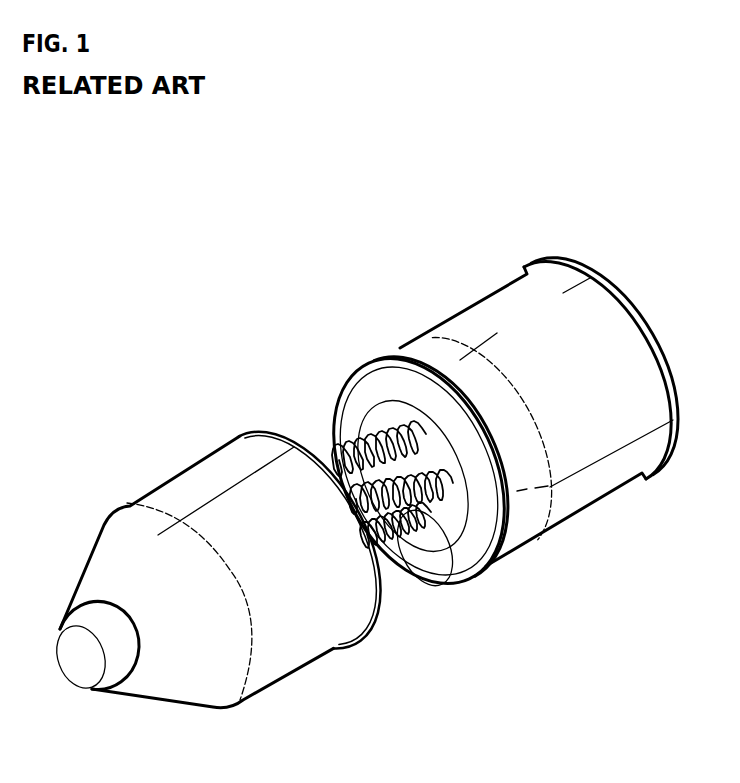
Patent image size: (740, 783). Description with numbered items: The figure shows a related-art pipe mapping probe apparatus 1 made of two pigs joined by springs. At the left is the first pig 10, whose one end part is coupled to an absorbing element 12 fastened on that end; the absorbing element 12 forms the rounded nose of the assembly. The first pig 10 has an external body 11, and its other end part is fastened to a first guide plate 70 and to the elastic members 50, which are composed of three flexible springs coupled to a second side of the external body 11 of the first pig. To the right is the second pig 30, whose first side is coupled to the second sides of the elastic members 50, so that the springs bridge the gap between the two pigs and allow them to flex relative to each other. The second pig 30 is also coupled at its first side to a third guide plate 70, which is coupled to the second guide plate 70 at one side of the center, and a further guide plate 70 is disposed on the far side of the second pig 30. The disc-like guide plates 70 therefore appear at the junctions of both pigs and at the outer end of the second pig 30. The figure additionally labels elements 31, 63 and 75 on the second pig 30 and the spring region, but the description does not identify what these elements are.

The connector assembly (related art) 1 is at (263, 219).
The first pig 10 is at (131, 463).
The external body of the first pig 11 is at (193, 476).
The absorbing element 12 is at (84, 662).
The second pig 30 is at (446, 287).
The cylindrical portion of second body 31 is at (498, 302).
The elastic members 50 is at (412, 430).
The guide boss 63 is at (400, 547).
The guide plate 70 is at (240, 424).
The spring seat ring 75 is at (393, 405).